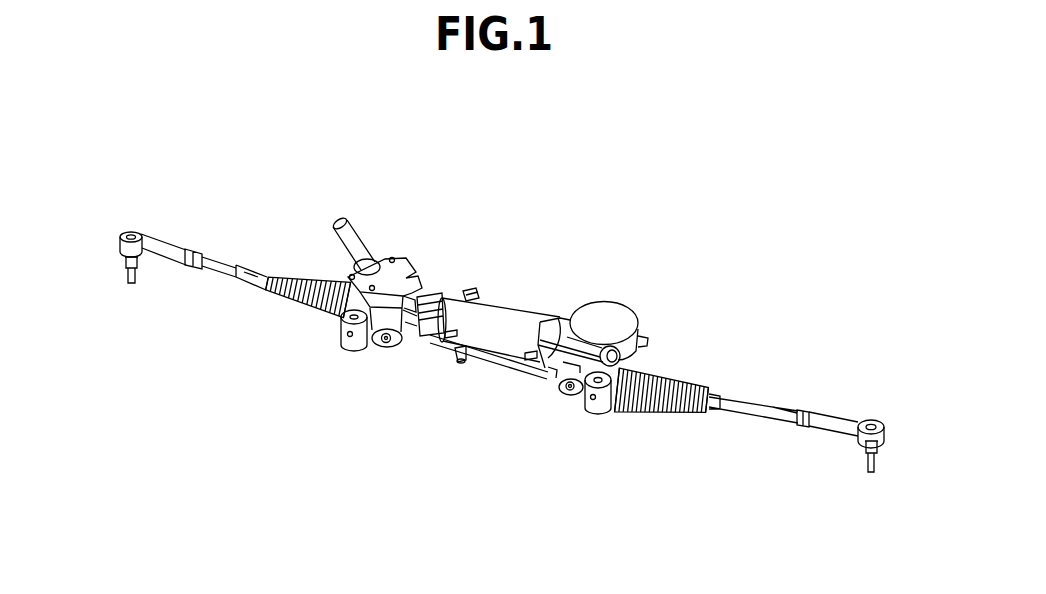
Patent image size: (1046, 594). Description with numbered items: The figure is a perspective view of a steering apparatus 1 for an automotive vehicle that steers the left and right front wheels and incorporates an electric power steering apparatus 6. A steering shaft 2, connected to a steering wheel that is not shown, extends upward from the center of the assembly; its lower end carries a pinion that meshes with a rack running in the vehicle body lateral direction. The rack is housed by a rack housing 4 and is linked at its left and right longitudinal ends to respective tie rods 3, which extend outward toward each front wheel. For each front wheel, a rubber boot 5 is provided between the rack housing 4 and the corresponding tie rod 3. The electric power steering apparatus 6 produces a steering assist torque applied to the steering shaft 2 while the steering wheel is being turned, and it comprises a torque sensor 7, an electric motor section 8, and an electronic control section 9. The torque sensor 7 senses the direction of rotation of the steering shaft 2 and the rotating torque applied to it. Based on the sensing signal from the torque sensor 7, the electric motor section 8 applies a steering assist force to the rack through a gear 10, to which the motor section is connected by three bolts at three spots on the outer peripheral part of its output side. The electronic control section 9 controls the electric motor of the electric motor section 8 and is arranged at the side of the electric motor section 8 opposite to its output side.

The steering apparatus 1 is at (474, 366).
The steering shaft 2 is at (353, 243).
The tie rod 3 is at (167, 250).
The rack housing 4 is at (607, 395).
The rubber boot 5 is at (297, 277).
The electric power steering apparatus 6 is at (527, 188).
The torque sensor 7 is at (413, 264).
The electric motor section 8 is at (518, 318).
The electronic control section 9 is at (455, 298).
The gear 10 is at (612, 313).